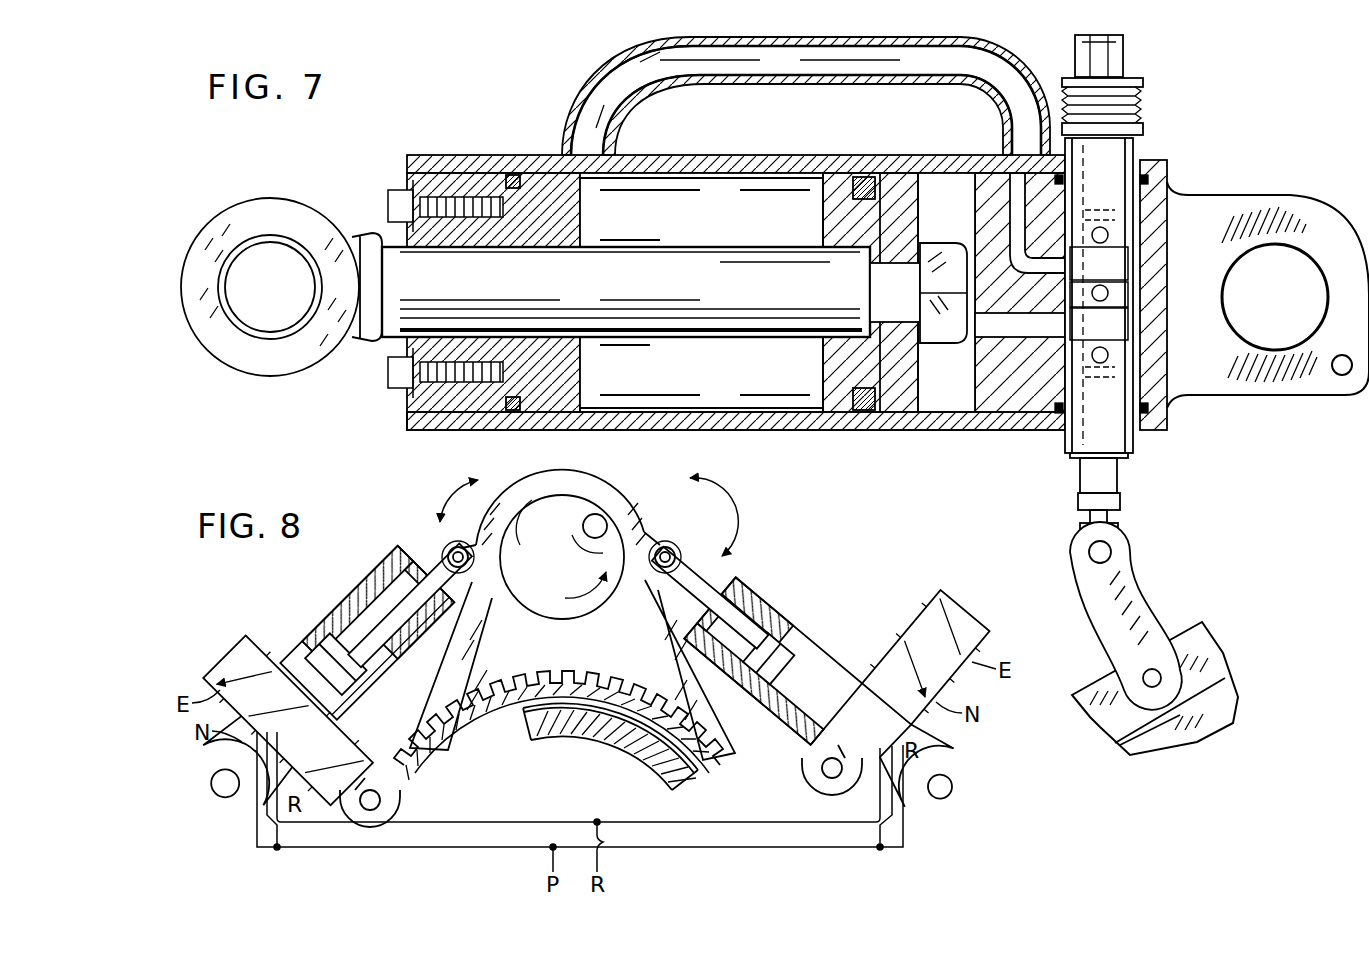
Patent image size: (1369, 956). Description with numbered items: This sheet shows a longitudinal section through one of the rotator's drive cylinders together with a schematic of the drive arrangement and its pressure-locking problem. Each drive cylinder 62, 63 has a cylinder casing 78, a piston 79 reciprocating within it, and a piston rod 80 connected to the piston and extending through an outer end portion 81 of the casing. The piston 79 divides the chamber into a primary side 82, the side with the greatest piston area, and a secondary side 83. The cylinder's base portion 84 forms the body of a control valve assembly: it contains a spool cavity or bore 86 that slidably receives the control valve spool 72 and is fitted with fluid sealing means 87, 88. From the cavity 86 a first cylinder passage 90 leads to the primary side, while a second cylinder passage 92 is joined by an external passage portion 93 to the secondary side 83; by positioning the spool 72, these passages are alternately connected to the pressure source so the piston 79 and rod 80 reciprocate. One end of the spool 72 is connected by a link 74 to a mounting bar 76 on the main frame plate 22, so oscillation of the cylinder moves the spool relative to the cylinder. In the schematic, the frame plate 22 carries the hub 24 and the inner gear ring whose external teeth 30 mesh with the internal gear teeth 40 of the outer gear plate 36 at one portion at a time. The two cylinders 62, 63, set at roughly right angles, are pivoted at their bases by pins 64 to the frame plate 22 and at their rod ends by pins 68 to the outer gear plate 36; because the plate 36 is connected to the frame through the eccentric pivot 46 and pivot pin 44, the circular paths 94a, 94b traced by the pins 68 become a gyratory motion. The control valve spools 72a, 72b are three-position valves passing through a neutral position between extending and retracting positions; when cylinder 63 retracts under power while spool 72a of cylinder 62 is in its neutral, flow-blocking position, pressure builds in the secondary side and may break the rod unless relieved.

In FIG. 7, the main frame plate 22 is at (1238, 702).
In FIG. 8, the main frame plate 22 is at (812, 762).
In FIG. 8, the hub 24 is at (600, 745).
In FIG. 8, the external teeth of the inner gear ring 30 is at (541, 680).
In FIG. 8, the outer gear plate 36 is at (642, 520).
In FIG. 8, the internal gear teeth 40 is at (590, 690).
In FIG. 8, the eccentric pivot pin 44 is at (596, 514).
In FIG. 8, the eccentric pivot 46 is at (560, 478).
In FIG. 7, the hydraulic cylinder 62 is at (945, 432).
In FIG. 8, the hydraulic cylinder 62 is at (343, 603).
In FIG. 8, the hydraulic cylinder 63 is at (820, 638).
In FIG. 8, the pivot pins 64 is at (945, 787).
In FIG. 8, the pivot pins 68 is at (675, 552).
In FIG. 7, the control valve spool 72 is at (1133, 445).
In FIG. 8, the control valve spool 72a is at (235, 662).
In FIG. 8, the control valve spool 72b is at (985, 630).
In FIG. 7, the link 74 is at (1120, 632).
In FIG. 7, the mounting bar 76 is at (1100, 683).
In FIG. 7, the cylinder casing 78 is at (907, 156).
In FIG. 7, the piston 79 is at (820, 390).
In FIG. 7, the piston rod 80 is at (660, 340).
In FIG. 7, the outer end portion of the casing 81 is at (405, 185).
In FIG. 7, the primary side 82 is at (962, 221).
In FIG. 7, the secondary side 83 is at (717, 221).
In FIG. 7, the base portion 84 is at (1158, 160).
In FIG. 7, the spool cavity or bore 86 is at (1133, 258).
In FIG. 7, the fluid sealing means 87 is at (1165, 183).
In FIG. 7, the fluid sealing means 88 is at (1160, 400).
In FIG. 7, the first cylinder passage 90 is at (997, 332).
In FIG. 7, the second cylinder passage 92 is at (1012, 198).
In FIG. 7, the external passage portion 93 is at (1003, 70).
In FIG. 8, the path 94a is at (452, 496).
In FIG. 8, the path 94b is at (745, 498).